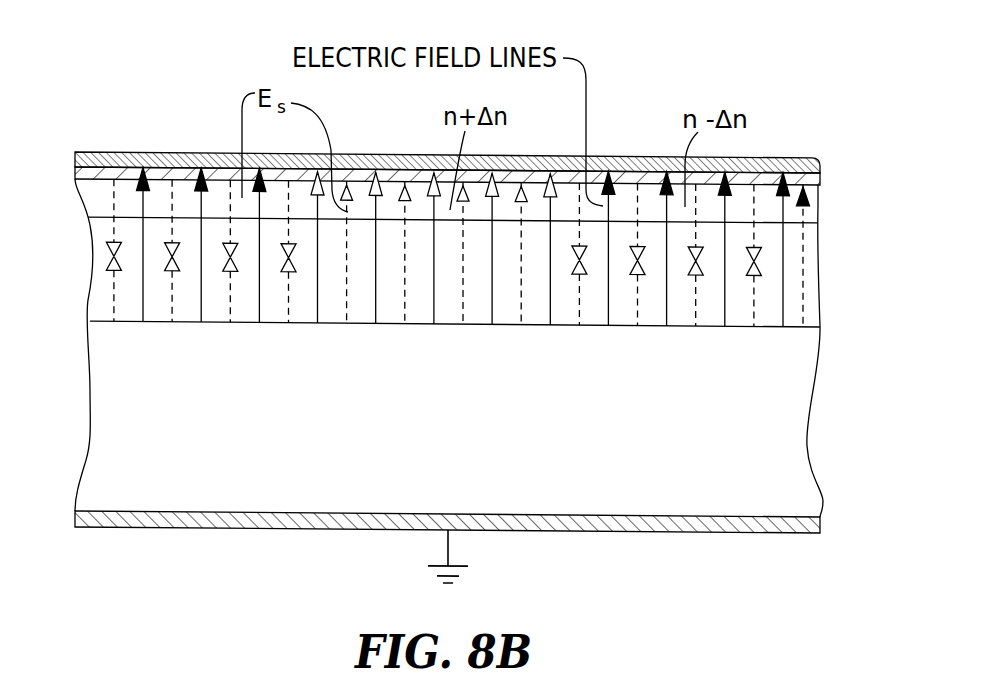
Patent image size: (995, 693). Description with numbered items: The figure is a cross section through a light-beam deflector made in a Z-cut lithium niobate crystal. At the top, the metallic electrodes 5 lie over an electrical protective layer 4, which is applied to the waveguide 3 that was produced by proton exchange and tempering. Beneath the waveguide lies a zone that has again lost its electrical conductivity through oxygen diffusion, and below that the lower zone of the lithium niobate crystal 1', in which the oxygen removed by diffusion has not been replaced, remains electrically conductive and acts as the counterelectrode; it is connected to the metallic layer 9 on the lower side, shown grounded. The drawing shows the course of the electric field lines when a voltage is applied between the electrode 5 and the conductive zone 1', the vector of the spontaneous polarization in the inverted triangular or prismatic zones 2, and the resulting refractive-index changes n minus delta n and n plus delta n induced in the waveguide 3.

The lower zone of the lithium niobate crystal 1' is at (483, 348).
The triangular or prismatic zones 2 is at (185, 200).
The waveguide 3 is at (810, 203).
The electrical protective layer 4 is at (815, 178).
The metallic electrodes 5 is at (807, 157).
The metallic layer 9 is at (795, 533).